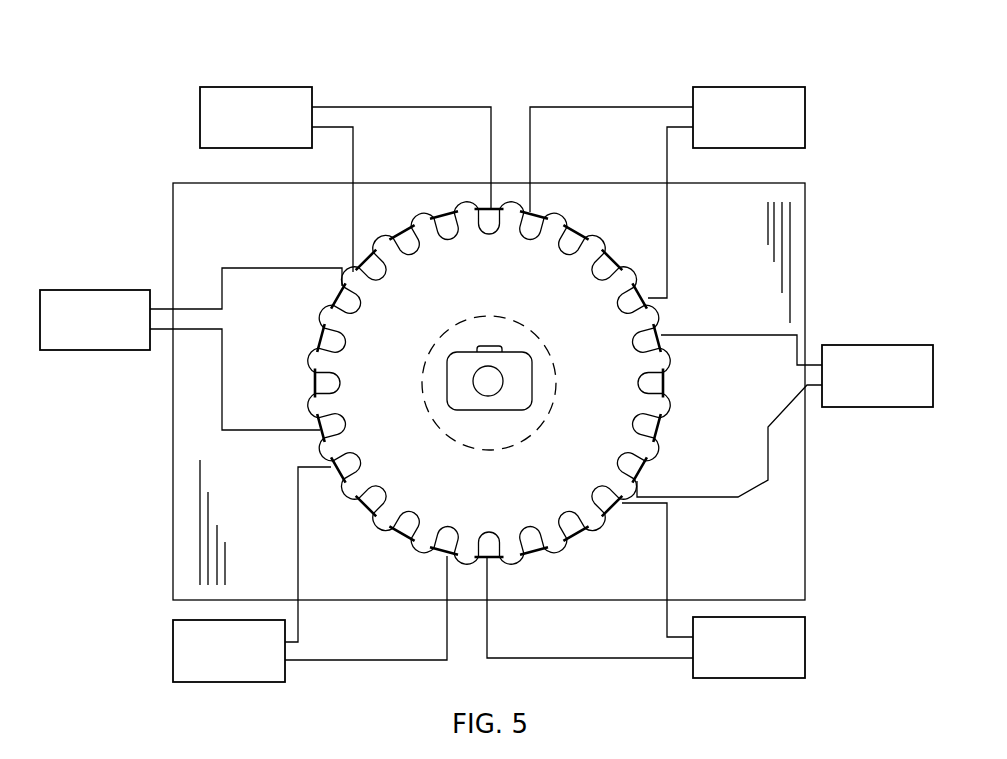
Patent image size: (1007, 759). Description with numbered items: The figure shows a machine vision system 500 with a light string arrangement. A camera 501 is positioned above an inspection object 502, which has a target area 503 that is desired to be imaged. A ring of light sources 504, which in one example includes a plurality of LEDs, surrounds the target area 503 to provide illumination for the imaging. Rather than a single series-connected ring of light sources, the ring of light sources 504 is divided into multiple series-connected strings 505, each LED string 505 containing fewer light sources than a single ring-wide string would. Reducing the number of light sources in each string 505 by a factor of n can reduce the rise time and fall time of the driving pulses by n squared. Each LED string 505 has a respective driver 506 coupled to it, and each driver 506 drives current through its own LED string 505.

The machine vision system 500 is at (126, 69).
The camera 501 is at (447, 372).
The inspection object 502 is at (173, 217).
The target area 503 is at (452, 327).
The ring of light sources 504 is at (530, 239).
The LED string 505 is at (444, 195).
The driver 506 is at (258, 87).